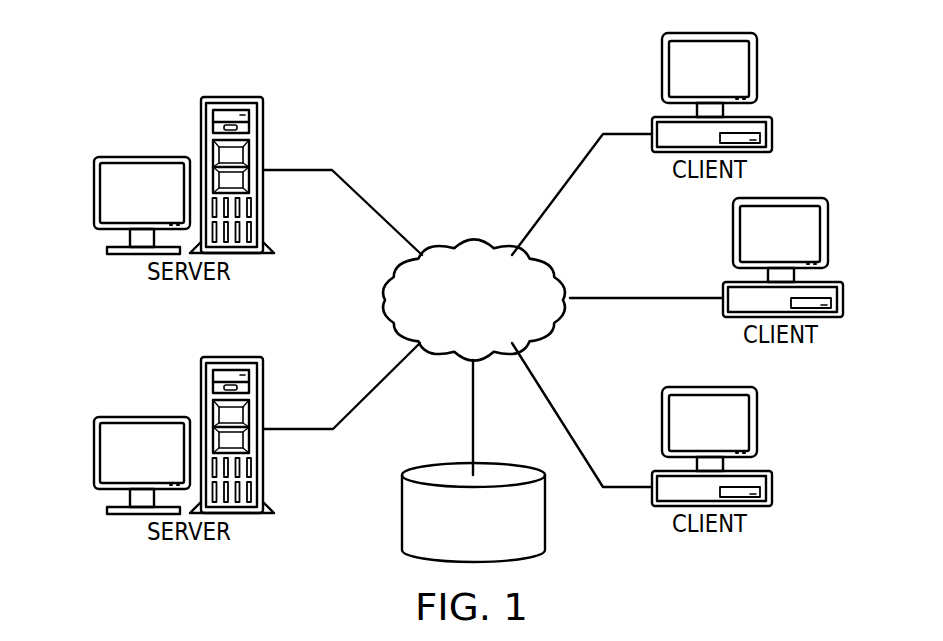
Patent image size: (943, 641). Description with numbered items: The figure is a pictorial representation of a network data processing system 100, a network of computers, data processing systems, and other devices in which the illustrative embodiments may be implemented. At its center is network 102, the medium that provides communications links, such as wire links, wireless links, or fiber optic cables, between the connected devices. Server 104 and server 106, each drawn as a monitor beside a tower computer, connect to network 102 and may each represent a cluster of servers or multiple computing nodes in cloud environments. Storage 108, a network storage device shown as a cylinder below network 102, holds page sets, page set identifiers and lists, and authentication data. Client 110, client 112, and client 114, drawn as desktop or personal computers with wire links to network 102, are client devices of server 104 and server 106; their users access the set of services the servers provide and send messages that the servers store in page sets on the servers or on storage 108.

The network data processing system 100 is at (341, 82).
The network 102 is at (447, 243).
The server 104 is at (95, 193).
The server 106 is at (94, 453).
The storage 108 is at (402, 512).
The client 110 is at (772, 125).
The client 112 is at (842, 308).
The client 114 is at (770, 498).